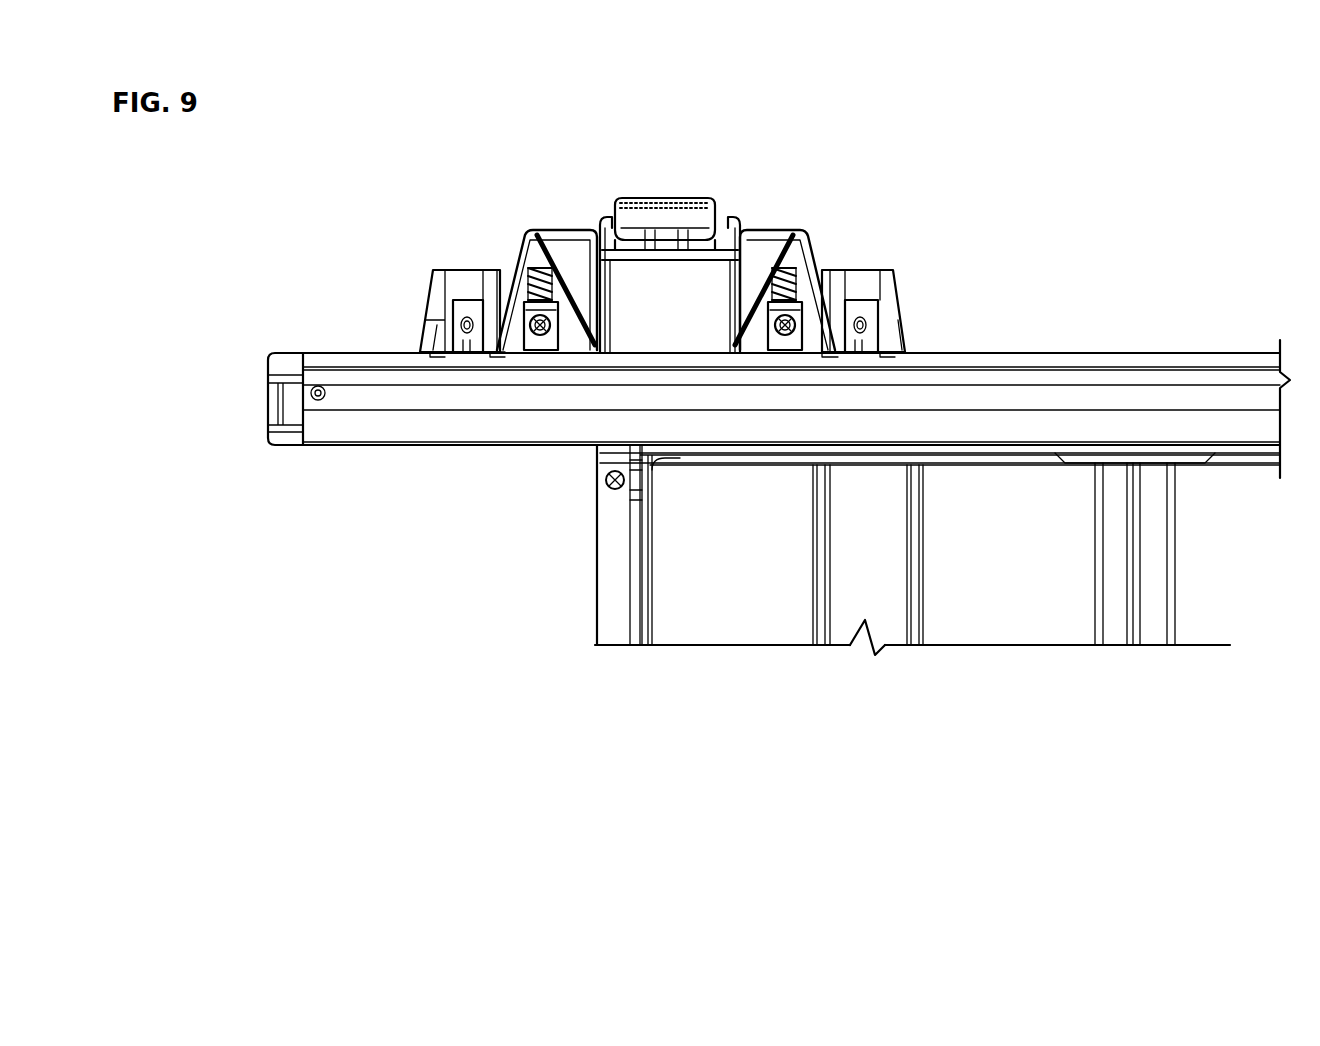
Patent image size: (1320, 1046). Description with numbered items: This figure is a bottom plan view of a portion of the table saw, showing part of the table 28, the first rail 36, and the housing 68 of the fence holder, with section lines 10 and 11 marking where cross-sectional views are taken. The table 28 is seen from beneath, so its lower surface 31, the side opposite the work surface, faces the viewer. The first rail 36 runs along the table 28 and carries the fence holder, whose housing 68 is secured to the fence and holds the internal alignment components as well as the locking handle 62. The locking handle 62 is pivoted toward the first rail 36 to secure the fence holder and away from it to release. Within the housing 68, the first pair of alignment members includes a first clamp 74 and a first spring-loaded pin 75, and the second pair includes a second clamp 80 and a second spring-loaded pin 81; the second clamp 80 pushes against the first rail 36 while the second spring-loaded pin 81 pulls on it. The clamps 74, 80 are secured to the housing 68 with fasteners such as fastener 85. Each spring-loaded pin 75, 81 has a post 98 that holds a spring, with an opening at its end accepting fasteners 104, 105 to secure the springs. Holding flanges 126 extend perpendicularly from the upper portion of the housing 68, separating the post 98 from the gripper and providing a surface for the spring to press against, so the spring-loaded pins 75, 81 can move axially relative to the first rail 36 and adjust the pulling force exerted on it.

The section line 10- 10 is at (798, 842).
The section line 11- 11 is at (858, 765).
The table 28 is at (1062, 542).
The lower surface 31 is at (1046, 620).
The first rail 36 is at (1132, 365).
The locking handle 62 is at (655, 200).
The housing 68 is at (558, 230).
The first clamp 74 is at (458, 313).
The first spring-loaded pin 75 is at (546, 345).
The second clamp 80 is at (863, 307).
The second spring-loaded pin 81 is at (790, 348).
The fastener 85 is at (865, 323).
The post 98 is at (520, 268).
The fastener 104 is at (518, 268).
The fastener 105 is at (805, 268).
The holding flanges 126 is at (803, 270).